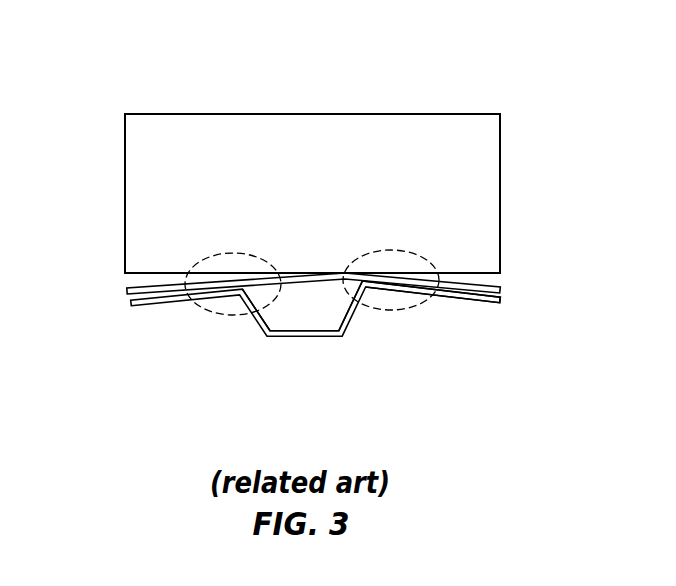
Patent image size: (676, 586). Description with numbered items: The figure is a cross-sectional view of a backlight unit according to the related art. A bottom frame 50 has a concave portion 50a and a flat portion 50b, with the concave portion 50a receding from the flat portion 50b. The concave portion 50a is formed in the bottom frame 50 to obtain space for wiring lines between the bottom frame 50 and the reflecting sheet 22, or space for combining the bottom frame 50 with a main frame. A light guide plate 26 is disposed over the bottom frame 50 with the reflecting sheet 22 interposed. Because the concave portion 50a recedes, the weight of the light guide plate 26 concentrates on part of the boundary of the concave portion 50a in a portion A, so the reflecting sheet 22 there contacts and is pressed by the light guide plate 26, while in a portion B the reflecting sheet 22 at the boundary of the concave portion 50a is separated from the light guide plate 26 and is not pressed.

The light guide plate 26 is at (310, 135).
The reflecting sheet 22 is at (483, 283).
The bottom frame 50 is at (163, 306).
The concave portion 50a is at (307, 358).
The flat portion 50b is at (459, 331).
The portion A is at (392, 251).
The portion B is at (234, 253).